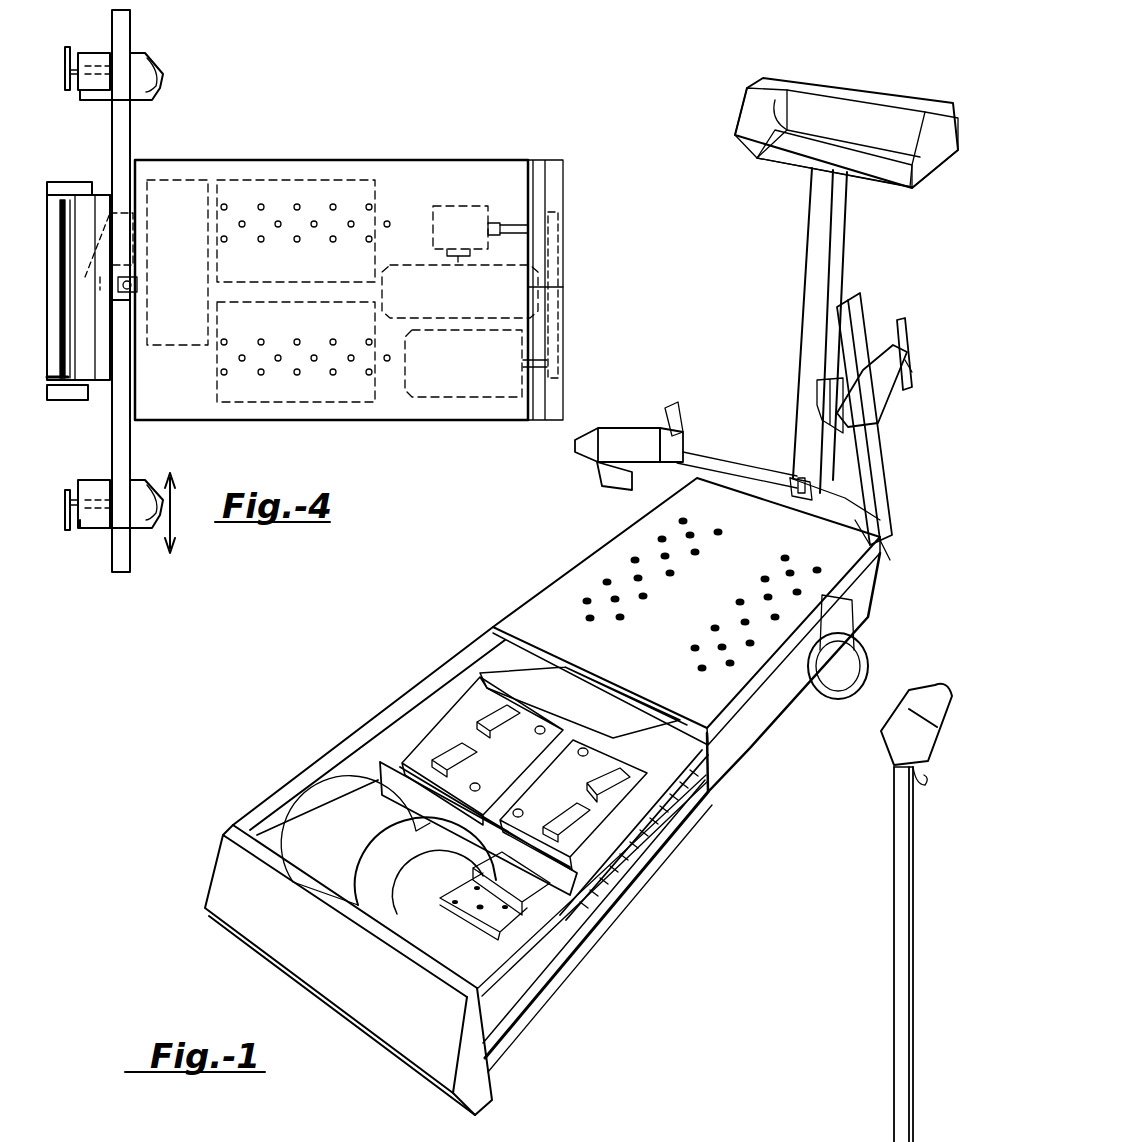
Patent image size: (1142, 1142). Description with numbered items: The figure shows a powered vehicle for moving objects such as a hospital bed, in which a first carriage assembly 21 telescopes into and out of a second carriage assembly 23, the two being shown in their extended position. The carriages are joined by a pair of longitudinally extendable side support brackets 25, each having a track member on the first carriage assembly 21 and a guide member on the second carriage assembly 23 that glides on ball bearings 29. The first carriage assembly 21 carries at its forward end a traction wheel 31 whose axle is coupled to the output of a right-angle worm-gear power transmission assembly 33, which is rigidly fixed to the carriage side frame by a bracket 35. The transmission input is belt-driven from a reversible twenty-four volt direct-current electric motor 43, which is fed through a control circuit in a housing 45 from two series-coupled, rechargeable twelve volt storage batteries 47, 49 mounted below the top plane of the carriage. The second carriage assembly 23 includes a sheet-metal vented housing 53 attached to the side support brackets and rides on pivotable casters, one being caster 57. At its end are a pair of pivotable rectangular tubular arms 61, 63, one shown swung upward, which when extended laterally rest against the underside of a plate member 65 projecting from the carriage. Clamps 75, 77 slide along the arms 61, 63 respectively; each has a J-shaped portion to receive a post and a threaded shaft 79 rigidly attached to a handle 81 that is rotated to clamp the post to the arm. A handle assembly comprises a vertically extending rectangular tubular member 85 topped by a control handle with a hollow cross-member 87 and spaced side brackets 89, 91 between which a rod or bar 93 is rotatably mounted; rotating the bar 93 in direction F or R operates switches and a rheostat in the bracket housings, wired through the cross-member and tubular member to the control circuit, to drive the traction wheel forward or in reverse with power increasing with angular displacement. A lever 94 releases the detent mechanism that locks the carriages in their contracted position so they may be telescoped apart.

In FIG. 1, the first carriage assembly 21 is at (396, 702).
In FIG. 1, the second carriage assembly 23 is at (519, 596).
In FIG. 1, the side support bracket 25 is at (603, 890).
In FIG. 1, the ball bearings 29 is at (675, 795).
In FIG. 4, the traction wheel 31 is at (508, 297).
In FIG. 1, the traction wheel 31 is at (420, 865).
In FIG. 4, the power transmission assembly 33 is at (470, 210).
In FIG. 1, the bracket 35 is at (540, 935).
In FIG. 4, the electric motor 43 is at (440, 385).
In FIG. 1, the electric motor 43 is at (336, 835).
In FIG. 4, the housing 45 is at (185, 185).
In FIG. 1, the housing 45 is at (623, 724).
In FIG. 4, the storage battery 47 is at (308, 185).
In FIG. 1, the storage battery 47 is at (565, 802).
In FIG. 4, the storage battery 49 is at (302, 392).
In FIG. 1, the storage battery 49 is at (505, 769).
In FIG. 1, the vented housing 53 is at (826, 600).
In FIG. 1, the pivotable caster 57 is at (826, 690).
In FIG. 4, the rectangular tubular arm 61 is at (125, 455).
In FIG. 1, the rectangular tubular arm 61 is at (612, 440).
In FIG. 4, the rectangular tubular arm 63 is at (124, 124).
In FIG. 1, the rectangular tubular arm 63 is at (870, 305).
In FIG. 4, the plate member 65 is at (125, 228).
In FIG. 1, the plate member 65 is at (838, 503).
In FIG. 4, the clamp 75 is at (95, 490).
In FIG. 1, the clamp 75 is at (688, 450).
In FIG. 4, the clamp 77 is at (98, 55).
In FIG. 1, the clamp 77 is at (880, 408).
In FIG. 4, the threaded shaft 79 is at (74, 540).
In FIG. 1, the threaded shaft 79 is at (913, 372).
In FIG. 4, the handle 81 is at (66, 520).
In FIG. 1, the handle 81 is at (908, 332).
In FIG. 1, the vertically extending rectangular tubular member 85 is at (812, 244).
In FIG. 1, the hollow cross-member 87 is at (876, 178).
In FIG. 4, the side bracket 89 is at (75, 400).
In FIG. 1, the side bracket 89 is at (748, 115).
In FIG. 4, the side bracket 91 is at (66, 182).
In FIG. 1, the side bracket 91 is at (938, 178).
In FIG. 4, the rod or bar 93 is at (52, 360).
In FIG. 1, the rod or bar 93 is at (905, 100).
In FIG. 4, the lever 94 is at (137, 285).
In FIG. 1, the lever 94 is at (790, 492).